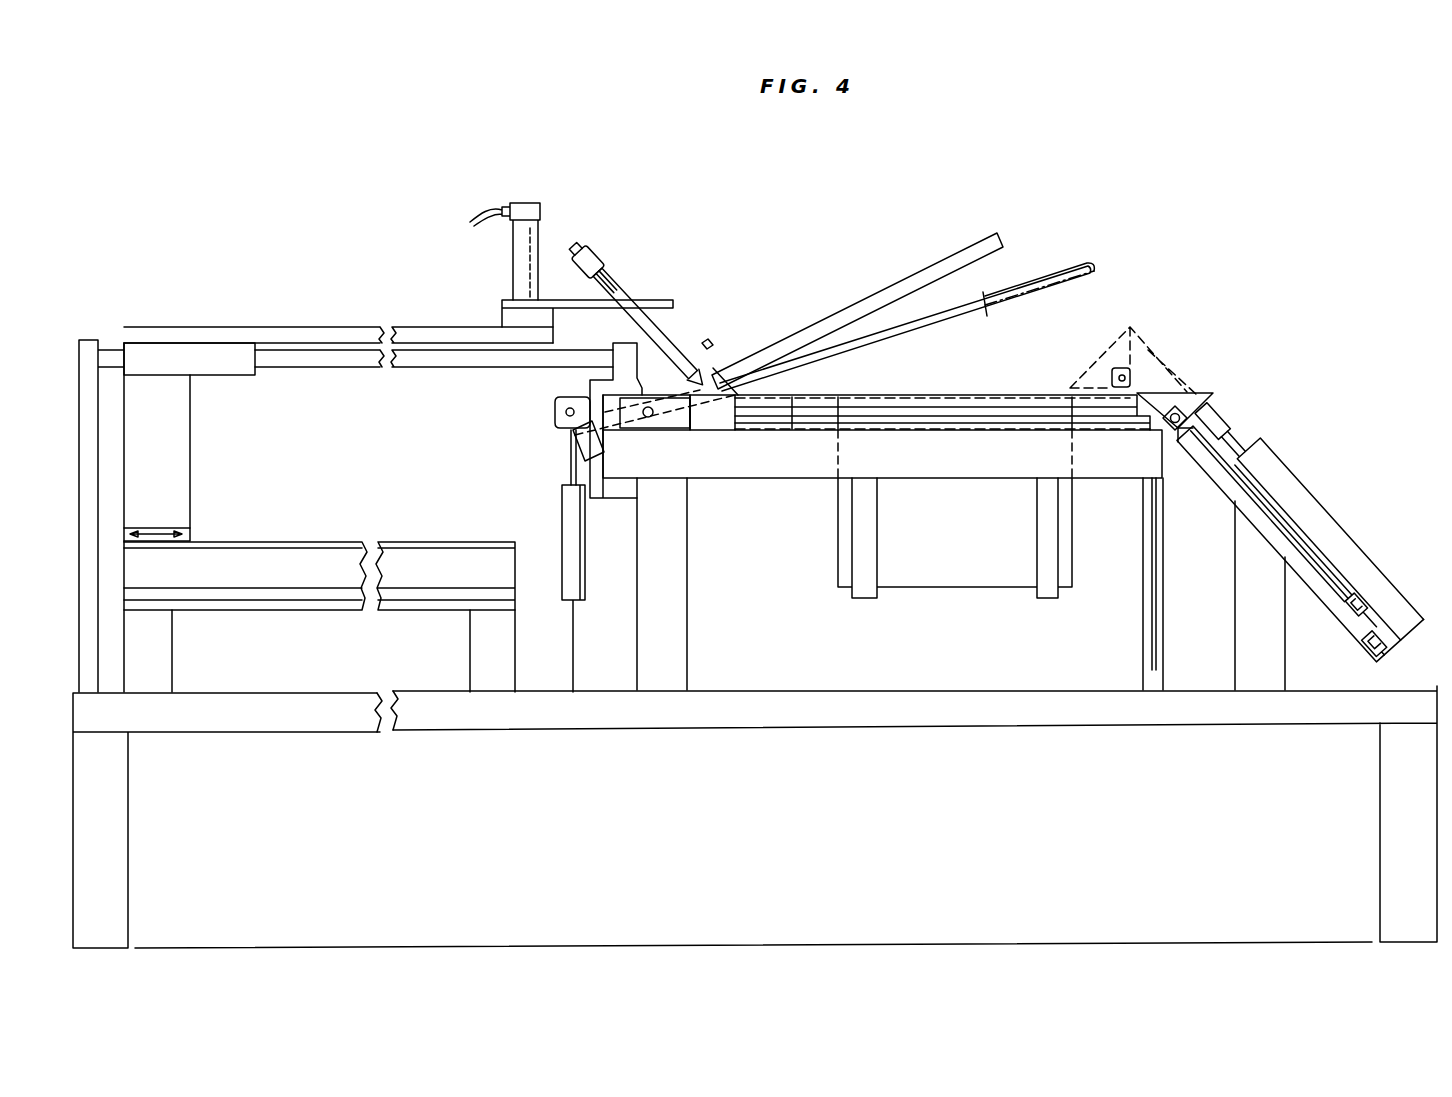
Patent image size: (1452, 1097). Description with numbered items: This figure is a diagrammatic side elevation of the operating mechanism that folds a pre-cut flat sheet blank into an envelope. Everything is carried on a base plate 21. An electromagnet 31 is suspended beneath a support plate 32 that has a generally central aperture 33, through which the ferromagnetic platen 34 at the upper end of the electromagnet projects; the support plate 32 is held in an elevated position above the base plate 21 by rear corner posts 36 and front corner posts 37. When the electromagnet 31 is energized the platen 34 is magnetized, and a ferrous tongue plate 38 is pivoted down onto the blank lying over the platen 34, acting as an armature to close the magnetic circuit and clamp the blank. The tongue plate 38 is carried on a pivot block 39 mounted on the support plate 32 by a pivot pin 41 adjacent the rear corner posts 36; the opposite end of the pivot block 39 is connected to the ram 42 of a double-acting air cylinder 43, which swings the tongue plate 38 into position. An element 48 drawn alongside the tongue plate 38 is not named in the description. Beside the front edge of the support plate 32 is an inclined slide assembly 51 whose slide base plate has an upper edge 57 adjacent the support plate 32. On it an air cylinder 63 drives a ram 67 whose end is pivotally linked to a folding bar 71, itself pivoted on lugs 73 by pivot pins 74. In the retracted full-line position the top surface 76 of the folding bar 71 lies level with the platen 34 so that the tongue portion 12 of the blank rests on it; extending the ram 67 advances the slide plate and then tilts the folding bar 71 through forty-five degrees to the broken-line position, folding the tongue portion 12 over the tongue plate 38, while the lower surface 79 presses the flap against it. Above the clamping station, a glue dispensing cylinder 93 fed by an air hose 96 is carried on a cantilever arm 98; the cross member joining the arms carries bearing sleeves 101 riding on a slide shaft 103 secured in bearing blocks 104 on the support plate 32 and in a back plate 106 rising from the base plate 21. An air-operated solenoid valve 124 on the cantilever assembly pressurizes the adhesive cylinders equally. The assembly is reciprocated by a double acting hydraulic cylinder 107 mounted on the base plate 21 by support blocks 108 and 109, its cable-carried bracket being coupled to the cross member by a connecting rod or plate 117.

The tongue portion 12 is at (1022, 300).
The base plate 21 is at (1040, 732).
The electromagnet 31 is at (827, 542).
The support plate 32 is at (768, 478).
The central aperture 33 is at (837, 446).
The ferromagnetic platen 34 is at (915, 400).
The rear corner posts 36 is at (686, 626).
The front corner posts 37 is at (1148, 632).
The ferrous tongue plate 38 is at (924, 320).
The pivot block 39 is at (590, 440).
The pivot pin 41 is at (651, 416).
The ram 42 is at (570, 468).
The double-acting air cylinder 43 is at (570, 512).
The arm 48 is at (867, 290).
The slide assembly 51 is at (1386, 574).
The upper edge of slide base plate 57 is at (1183, 446).
The air cylinder 63 is at (1212, 419).
The ram 67 is at (1238, 449).
The folding bar 71 is at (1197, 400).
The lugs 73 is at (1172, 440).
The pivot pins 74 is at (1166, 428).
The top surface of folding bar 76 is at (1112, 342).
The lower surface of folding bar 79 is at (1070, 390).
The glue dispensing cylinder 93 is at (665, 335).
The air hose 96 is at (578, 276).
The cantilever arm 98 is at (413, 330).
The bearing sleeves 101 is at (213, 362).
The slide shaft 103 is at (311, 352).
The bearing blocks 104 is at (621, 345).
The back plate 106 is at (90, 340).
The double acting hydraulic cylinder 107 is at (319, 569).
The support block 108 is at (166, 646).
The support block 109 is at (472, 654).
The connecting rod or plate 117 is at (178, 460).
The air-operated solenoid valve 124 is at (514, 258).